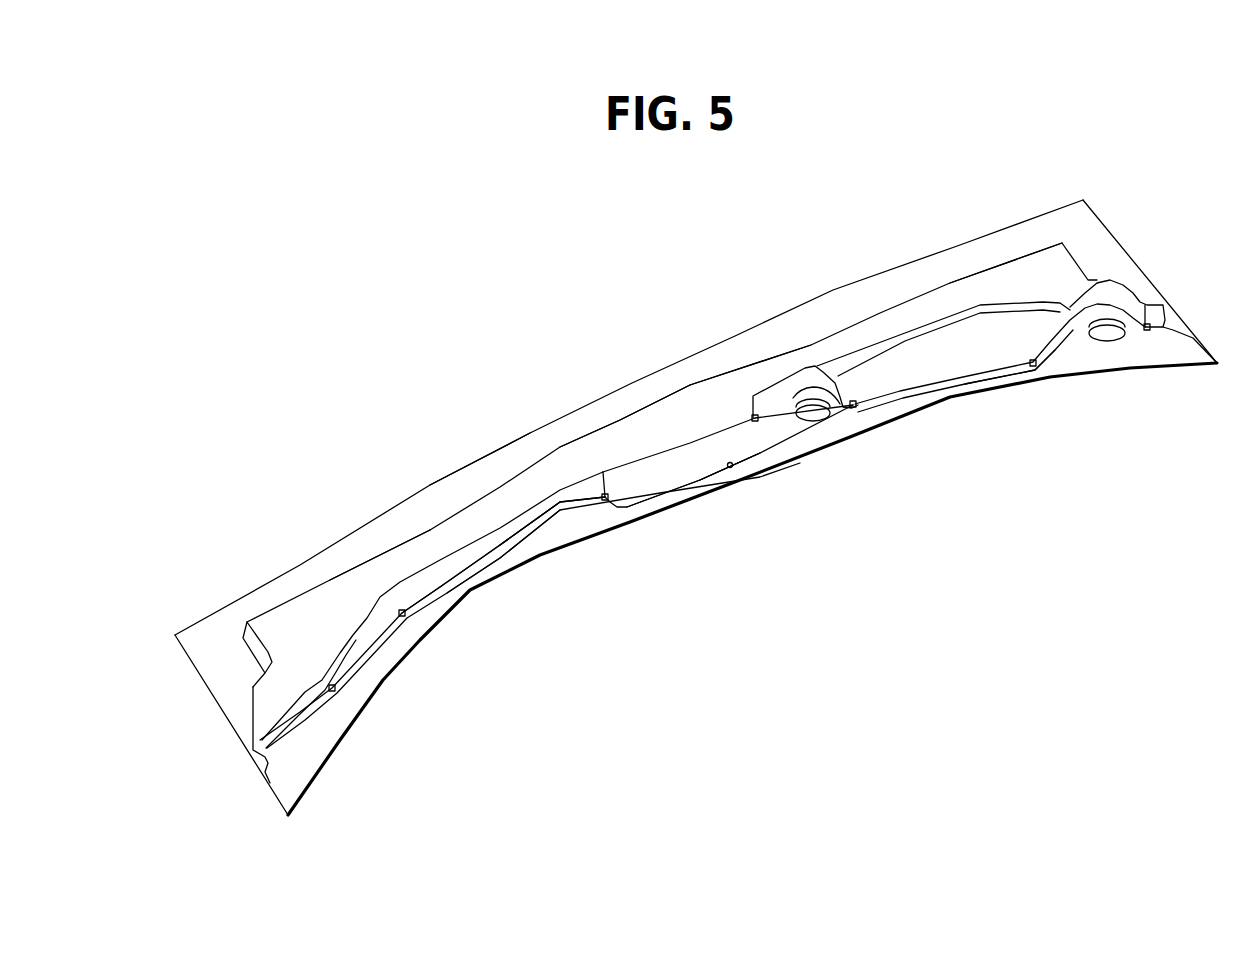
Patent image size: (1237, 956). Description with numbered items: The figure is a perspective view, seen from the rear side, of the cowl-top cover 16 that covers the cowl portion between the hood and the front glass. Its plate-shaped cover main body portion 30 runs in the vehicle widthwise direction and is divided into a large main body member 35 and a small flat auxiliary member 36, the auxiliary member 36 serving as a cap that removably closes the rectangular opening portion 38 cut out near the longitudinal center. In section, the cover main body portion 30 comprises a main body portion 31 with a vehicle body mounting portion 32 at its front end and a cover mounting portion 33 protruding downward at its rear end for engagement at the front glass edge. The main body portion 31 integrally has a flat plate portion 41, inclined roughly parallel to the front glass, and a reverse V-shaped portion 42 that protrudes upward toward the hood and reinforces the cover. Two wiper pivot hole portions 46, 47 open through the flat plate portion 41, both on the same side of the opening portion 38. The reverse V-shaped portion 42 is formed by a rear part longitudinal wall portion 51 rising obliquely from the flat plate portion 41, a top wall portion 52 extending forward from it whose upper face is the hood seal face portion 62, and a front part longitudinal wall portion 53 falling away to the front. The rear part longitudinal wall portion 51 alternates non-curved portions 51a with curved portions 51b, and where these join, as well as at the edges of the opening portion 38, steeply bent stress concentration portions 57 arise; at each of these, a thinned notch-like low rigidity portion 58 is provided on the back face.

The cowl-top cover 16 is at (758, 257).
The cover main body portion 30 is at (945, 258).
The main body portion 31 is at (725, 368).
The vehicle body mounting portion 32 is at (633, 392).
The cover mounting portion 33 is at (897, 412).
The main body member 35 is at (1010, 237).
The auxiliary member 36 is at (682, 483).
The opening portion 38 is at (731, 468).
The flat plate portion 41 is at (540, 548).
The reverse V-shaped portion 42 is at (498, 548).
The one wiper pivot hole portion 46 is at (1110, 342).
The other wiper pivot hole portion 47 is at (818, 423).
The rear part longitudinal wall portion 51 is at (463, 565).
The non-curved portion 51a is at (568, 505).
The curved portion 51b is at (350, 638).
The top wall portion 52 is at (452, 525).
The front part longitudinal wall portion 53 is at (417, 533).
The stress concentration portion 57 is at (965, 387).
The low rigidity portion 58 is at (335, 692).
The hood seal face portion 62 is at (375, 568).